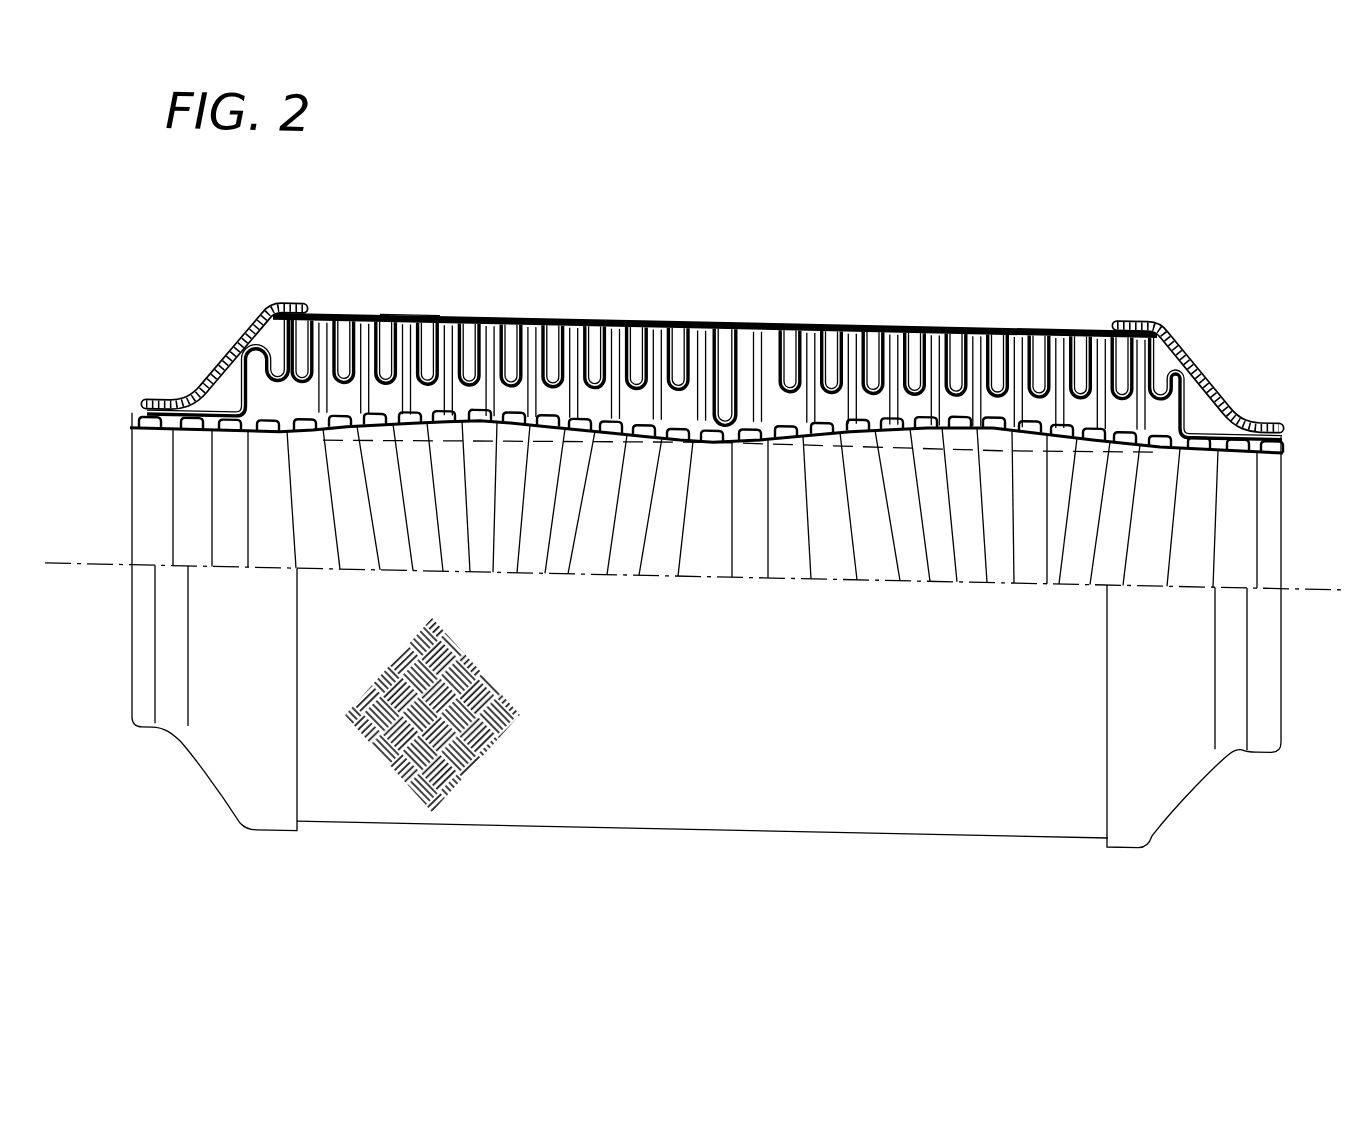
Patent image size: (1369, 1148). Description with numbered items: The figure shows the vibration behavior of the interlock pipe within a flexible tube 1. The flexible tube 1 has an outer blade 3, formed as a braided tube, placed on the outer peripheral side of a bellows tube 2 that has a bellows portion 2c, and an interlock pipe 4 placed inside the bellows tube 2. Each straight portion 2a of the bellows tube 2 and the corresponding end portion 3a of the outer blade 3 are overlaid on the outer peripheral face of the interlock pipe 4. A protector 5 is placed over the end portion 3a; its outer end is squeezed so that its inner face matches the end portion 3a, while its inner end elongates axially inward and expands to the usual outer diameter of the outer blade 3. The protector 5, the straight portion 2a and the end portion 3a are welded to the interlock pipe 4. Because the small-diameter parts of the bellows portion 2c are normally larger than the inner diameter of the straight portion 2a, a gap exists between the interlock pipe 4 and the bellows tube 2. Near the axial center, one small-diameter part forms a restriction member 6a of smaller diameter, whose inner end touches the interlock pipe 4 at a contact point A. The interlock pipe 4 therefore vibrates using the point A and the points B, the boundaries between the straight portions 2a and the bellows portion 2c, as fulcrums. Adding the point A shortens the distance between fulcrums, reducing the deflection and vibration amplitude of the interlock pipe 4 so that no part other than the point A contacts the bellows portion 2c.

The flexible tube 1 is at (918, 271).
The bellows tube 2 is at (697, 311).
The straight portion 2a is at (205, 388).
The bellows portion 2c is at (410, 310).
The outer blade 3 is at (813, 308).
The end portion 3a is at (201, 393).
The interlock pipe 4 is at (918, 543).
The protector 5 is at (1176, 302).
The restriction member 6a is at (746, 311).
The contact point A is at (722, 427).
The points B is at (235, 423).